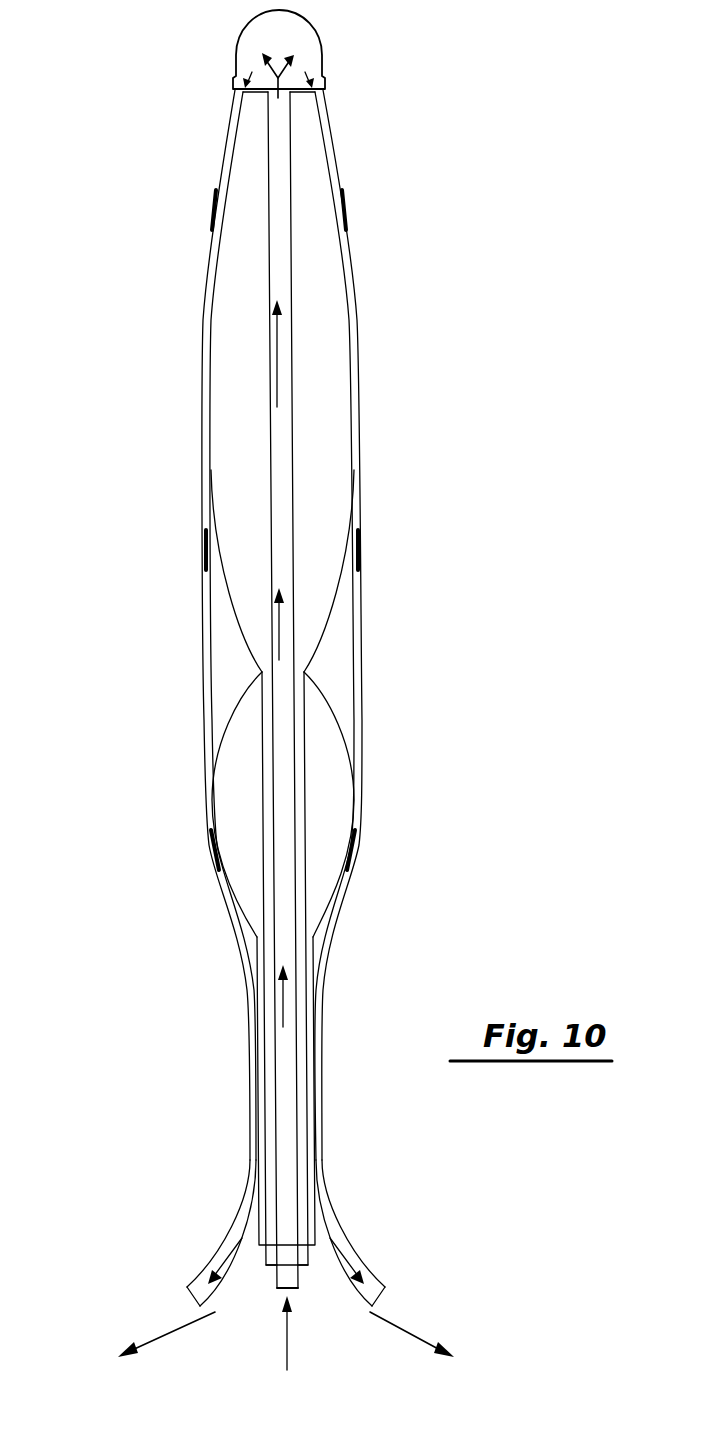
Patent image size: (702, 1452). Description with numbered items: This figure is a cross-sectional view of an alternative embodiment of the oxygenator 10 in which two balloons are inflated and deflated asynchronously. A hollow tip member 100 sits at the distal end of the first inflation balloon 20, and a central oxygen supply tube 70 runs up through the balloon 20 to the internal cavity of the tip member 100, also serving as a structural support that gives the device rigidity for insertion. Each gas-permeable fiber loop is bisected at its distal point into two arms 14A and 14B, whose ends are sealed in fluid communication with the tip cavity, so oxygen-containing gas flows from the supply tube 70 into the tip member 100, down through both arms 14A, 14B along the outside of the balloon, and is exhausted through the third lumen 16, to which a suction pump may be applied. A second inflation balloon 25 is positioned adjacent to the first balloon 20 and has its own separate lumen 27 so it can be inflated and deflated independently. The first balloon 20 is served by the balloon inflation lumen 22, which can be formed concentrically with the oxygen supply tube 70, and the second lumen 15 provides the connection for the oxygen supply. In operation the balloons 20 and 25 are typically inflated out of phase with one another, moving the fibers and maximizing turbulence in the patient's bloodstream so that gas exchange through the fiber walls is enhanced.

The oxygenator 10 is at (140, 467).
The tip member 100 is at (297, 41).
The oxygen supply tube 70 is at (277, 182).
The fiber arm 14A is at (205, 315).
The fiber arm 14B is at (356, 315).
The inflation balloon 20 is at (320, 471).
The second inflation balloon 25 is at (330, 790).
The balloon inflation lumen 22 is at (265, 782).
The separate lumen 27 is at (262, 1016).
The third lumen 16 is at (240, 1243).
The second lumen 15 is at (300, 1282).